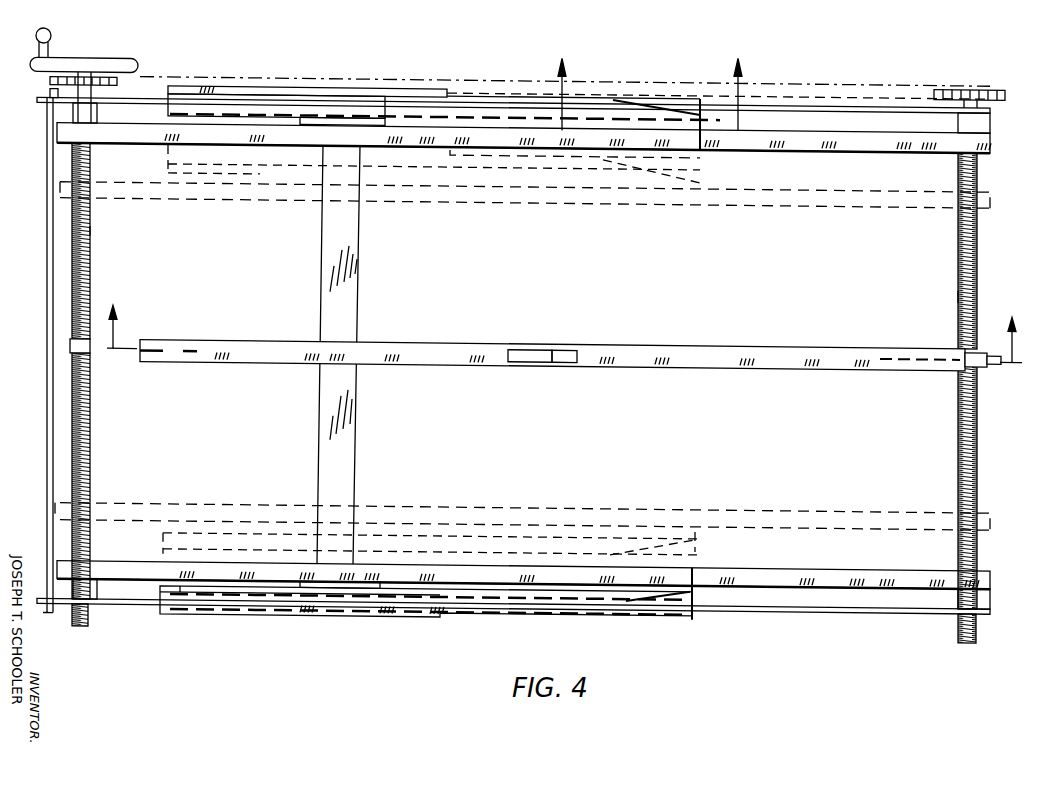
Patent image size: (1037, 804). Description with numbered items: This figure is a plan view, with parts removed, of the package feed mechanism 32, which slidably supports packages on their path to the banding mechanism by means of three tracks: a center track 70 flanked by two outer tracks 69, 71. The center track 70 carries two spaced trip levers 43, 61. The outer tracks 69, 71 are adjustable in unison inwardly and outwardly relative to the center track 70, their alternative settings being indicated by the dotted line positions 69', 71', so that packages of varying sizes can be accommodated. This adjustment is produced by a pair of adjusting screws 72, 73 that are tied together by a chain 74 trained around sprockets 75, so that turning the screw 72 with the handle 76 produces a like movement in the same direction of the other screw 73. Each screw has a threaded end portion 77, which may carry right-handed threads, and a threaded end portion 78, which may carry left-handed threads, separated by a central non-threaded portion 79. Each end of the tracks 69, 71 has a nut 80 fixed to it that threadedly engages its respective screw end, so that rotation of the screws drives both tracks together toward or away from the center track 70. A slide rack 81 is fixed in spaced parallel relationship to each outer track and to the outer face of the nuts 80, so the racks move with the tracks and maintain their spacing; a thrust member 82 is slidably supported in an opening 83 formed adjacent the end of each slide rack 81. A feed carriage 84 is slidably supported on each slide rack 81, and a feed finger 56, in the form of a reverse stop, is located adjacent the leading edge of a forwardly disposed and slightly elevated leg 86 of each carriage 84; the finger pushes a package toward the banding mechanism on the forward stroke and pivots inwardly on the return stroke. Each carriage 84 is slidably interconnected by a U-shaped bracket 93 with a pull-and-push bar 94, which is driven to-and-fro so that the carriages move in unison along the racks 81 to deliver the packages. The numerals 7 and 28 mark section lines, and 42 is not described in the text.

The section line 7- 7 is at (647, 93).
The section line 28- 28 is at (564, 333).
The package feed mechanism 32 is at (730, 622).
The side plate 42 is at (212, 113).
The trip lever 43 is at (558, 343).
The feed finger 56 is at (700, 142).
The trip lever 61 is at (992, 355).
The track 69 is at (524, 149).
The dotted line position of track 69' is at (525, 188).
The center track 70 is at (854, 340).
The track 71 is at (523, 565).
The dotted line position of track 71' is at (522, 507).
The adjusting screw 72 is at (133, 240).
The adjusting screw 73 is at (962, 280).
The chain 74 is at (452, 77).
The sprocket 75 is at (117, 78).
The handle 76 is at (58, 57).
The threaded end portion 77 is at (88, 278).
The threaded end portion 78 is at (90, 437).
The central non-threaded portion 79 is at (86, 351).
The nut 80 is at (84, 116).
The slide rack 81 is at (813, 101).
The thrust member 82 is at (47, 241).
The opening 83 is at (50, 98).
The feed carriage 84 is at (318, 88).
The leg 86 is at (616, 95).
The U-shaped bracket 93 is at (373, 120).
The pull-and-push bar 94 is at (357, 483).